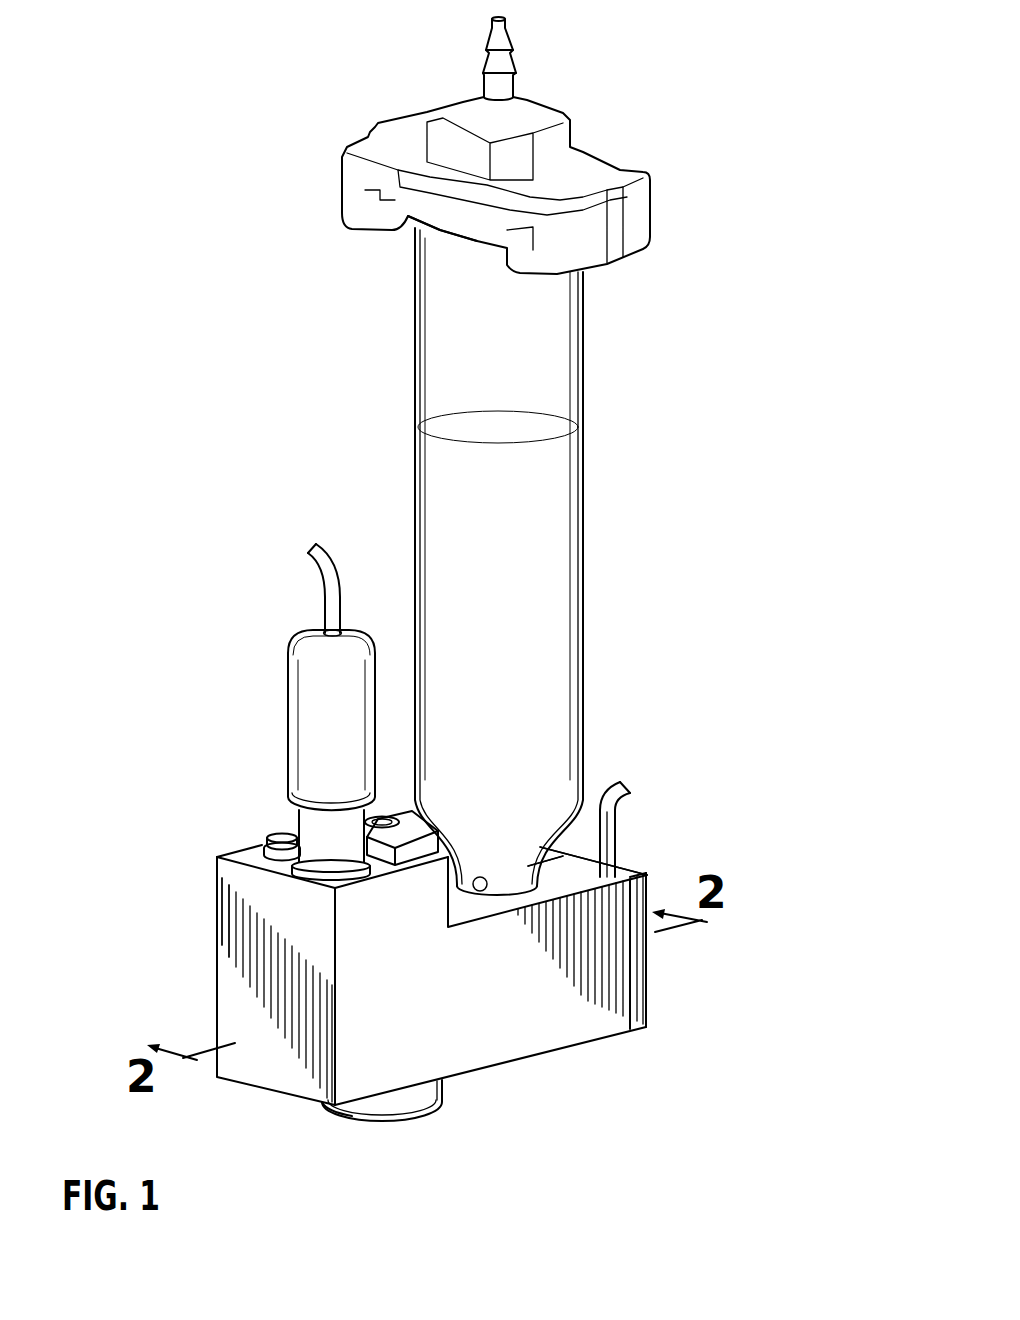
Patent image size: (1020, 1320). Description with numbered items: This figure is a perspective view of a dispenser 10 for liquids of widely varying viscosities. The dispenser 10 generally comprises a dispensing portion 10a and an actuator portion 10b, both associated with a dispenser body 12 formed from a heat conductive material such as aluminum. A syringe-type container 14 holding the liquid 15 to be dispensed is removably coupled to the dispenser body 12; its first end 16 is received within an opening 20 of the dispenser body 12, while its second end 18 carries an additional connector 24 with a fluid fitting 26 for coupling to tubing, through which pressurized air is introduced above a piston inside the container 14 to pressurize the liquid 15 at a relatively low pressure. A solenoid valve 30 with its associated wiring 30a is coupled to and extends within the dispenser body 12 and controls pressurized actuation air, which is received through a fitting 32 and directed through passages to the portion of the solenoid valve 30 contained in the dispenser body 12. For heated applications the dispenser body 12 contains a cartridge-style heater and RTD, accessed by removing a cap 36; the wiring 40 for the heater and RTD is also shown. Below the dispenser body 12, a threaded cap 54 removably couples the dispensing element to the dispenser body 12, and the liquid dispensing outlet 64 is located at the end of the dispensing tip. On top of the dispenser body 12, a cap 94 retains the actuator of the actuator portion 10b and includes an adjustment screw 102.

The dispenser 10 is at (792, 230).
The dispensing portion 10a is at (320, 1122).
The actuator portion 10b is at (212, 899).
The dispenser body 12 is at (563, 1050).
The container 14 is at (585, 583).
The liquid 15 is at (525, 440).
The first end 16 is at (563, 868).
The second end 18 is at (433, 232).
The opening 20 is at (478, 892).
The additional connector 24 is at (665, 211).
The fluid fitting 26 is at (507, 25).
The solenoid valve 30 is at (288, 711).
The wiring 30a is at (325, 598).
The fitting 32 is at (280, 833).
The cap 36 is at (650, 981).
The wiring 40 is at (618, 812).
The threaded cap 54 is at (443, 1096).
The liquid dispensing outlet 64 is at (381, 1120).
The cap 94 is at (420, 818).
The adjustment screw 102 is at (385, 820).